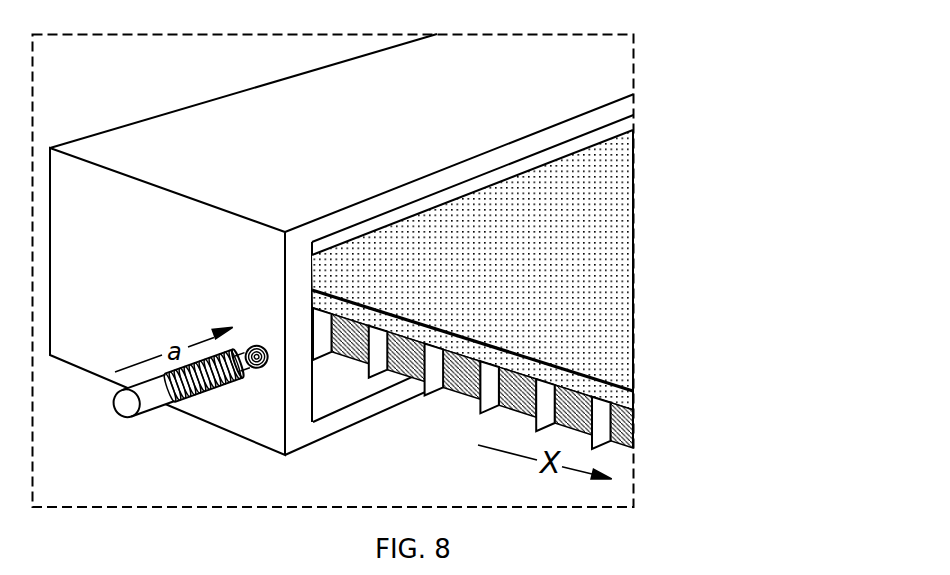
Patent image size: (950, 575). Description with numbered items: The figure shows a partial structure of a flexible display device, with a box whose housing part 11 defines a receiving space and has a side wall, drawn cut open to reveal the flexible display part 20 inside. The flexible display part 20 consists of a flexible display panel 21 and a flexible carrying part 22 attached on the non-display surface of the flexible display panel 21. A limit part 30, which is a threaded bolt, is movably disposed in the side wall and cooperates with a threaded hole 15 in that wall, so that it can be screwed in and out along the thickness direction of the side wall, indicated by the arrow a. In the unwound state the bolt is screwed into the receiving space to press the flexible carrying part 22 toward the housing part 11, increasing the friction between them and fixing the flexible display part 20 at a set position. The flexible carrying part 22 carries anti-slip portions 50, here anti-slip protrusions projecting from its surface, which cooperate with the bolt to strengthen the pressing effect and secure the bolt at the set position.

The housing part 11 is at (123, 340).
The threaded hole 15 is at (258, 370).
The flexible display part 20 is at (534, 289).
The flexible display panel 21 is at (605, 370).
The flexible carrying part 22 is at (692, 323).
The limit part 30 is at (203, 424).
The anti-slip portion 50 is at (482, 408).